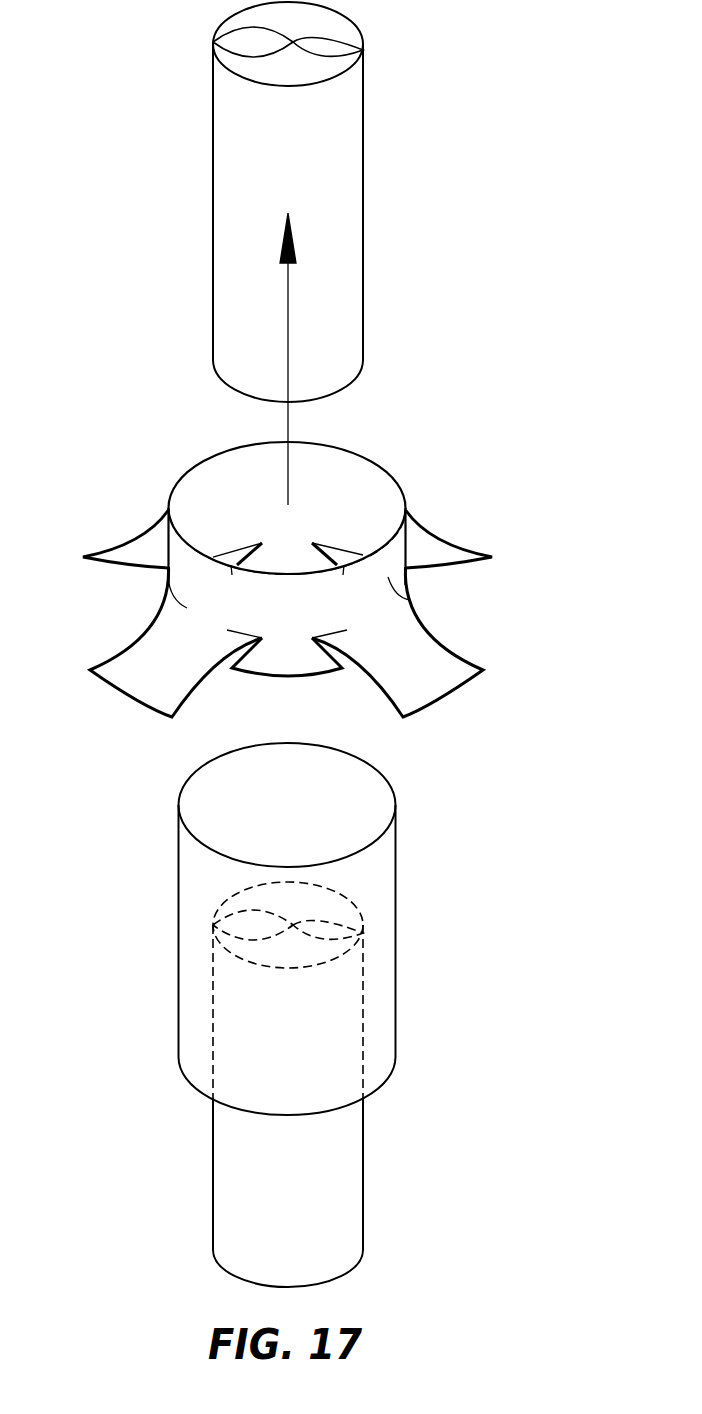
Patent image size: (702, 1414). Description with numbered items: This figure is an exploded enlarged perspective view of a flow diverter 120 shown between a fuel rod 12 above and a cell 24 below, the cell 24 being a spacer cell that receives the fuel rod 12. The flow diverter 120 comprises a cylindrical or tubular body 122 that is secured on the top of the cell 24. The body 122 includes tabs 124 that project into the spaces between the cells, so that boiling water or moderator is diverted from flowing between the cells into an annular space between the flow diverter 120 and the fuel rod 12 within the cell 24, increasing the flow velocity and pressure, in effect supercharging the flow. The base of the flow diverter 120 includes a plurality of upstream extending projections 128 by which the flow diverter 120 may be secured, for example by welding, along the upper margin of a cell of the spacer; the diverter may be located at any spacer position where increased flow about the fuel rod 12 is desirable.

The fuel rod 12 is at (213, 197).
The cell 24 is at (190, 970).
The flow diverter 120 is at (337, 599).
The cylindrical or tubular body 122 is at (392, 590).
The tabs 124 is at (432, 682).
The upstream extending projections 128 is at (288, 663).